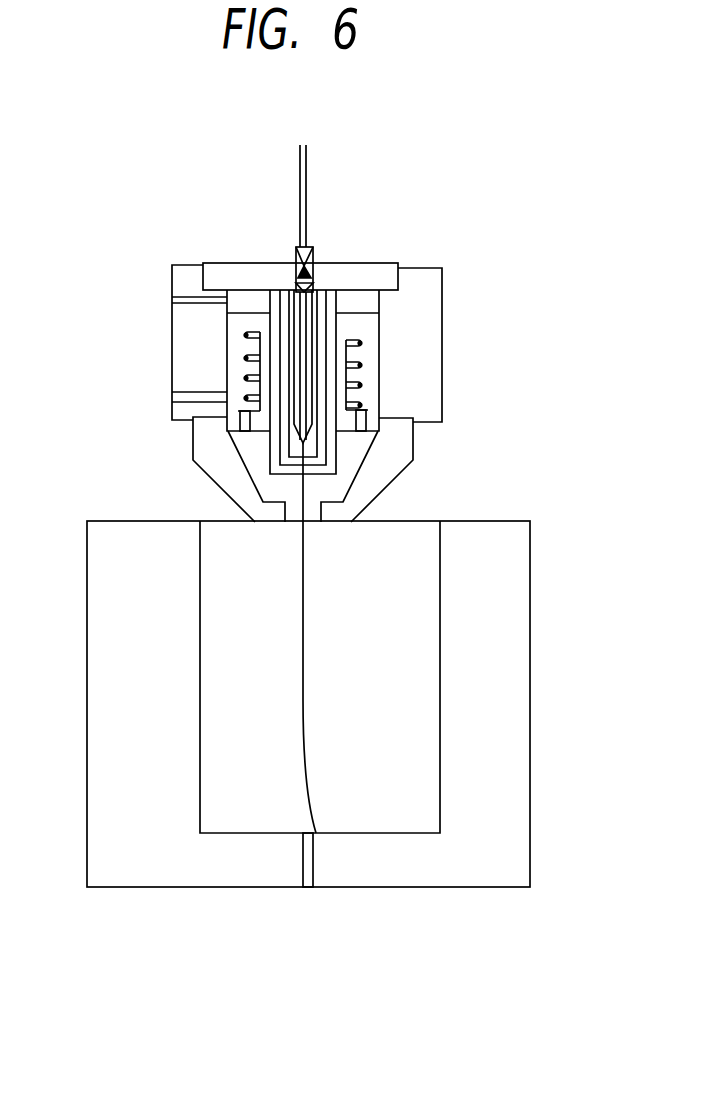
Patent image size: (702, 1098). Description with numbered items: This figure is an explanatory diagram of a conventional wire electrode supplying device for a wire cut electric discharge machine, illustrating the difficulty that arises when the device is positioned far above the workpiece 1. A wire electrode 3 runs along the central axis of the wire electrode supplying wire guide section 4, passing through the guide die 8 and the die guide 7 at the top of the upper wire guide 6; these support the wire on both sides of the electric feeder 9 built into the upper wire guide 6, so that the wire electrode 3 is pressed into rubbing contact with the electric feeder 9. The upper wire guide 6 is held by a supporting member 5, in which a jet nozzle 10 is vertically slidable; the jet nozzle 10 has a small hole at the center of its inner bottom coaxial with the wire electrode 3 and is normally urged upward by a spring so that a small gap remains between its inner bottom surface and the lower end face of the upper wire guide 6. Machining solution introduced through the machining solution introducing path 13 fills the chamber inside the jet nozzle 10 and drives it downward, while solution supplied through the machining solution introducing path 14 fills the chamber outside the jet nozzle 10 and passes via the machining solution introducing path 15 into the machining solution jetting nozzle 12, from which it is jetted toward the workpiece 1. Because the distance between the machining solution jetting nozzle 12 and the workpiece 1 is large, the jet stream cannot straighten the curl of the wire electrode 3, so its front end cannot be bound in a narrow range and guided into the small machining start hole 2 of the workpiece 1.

The workpiece 1 is at (513, 752).
The machining start hole 2 is at (301, 857).
The wire electrode 3 is at (310, 172).
The wire electrode supplying wire guide section 4 is at (332, 345).
The supporting member 5 is at (430, 385).
The upper wire guide 6 is at (378, 280).
The die guide 7 is at (319, 447).
The guide die 8 is at (313, 247).
The electric feeder 9 is at (292, 306).
The jet nozzle 10 is at (268, 446).
The machining solution jetting nozzle 12 is at (228, 475).
The machining solution introducing path 13 is at (172, 300).
The machining solution introducing path 14 is at (172, 397).
The machining solution introducing path 15 is at (242, 410).